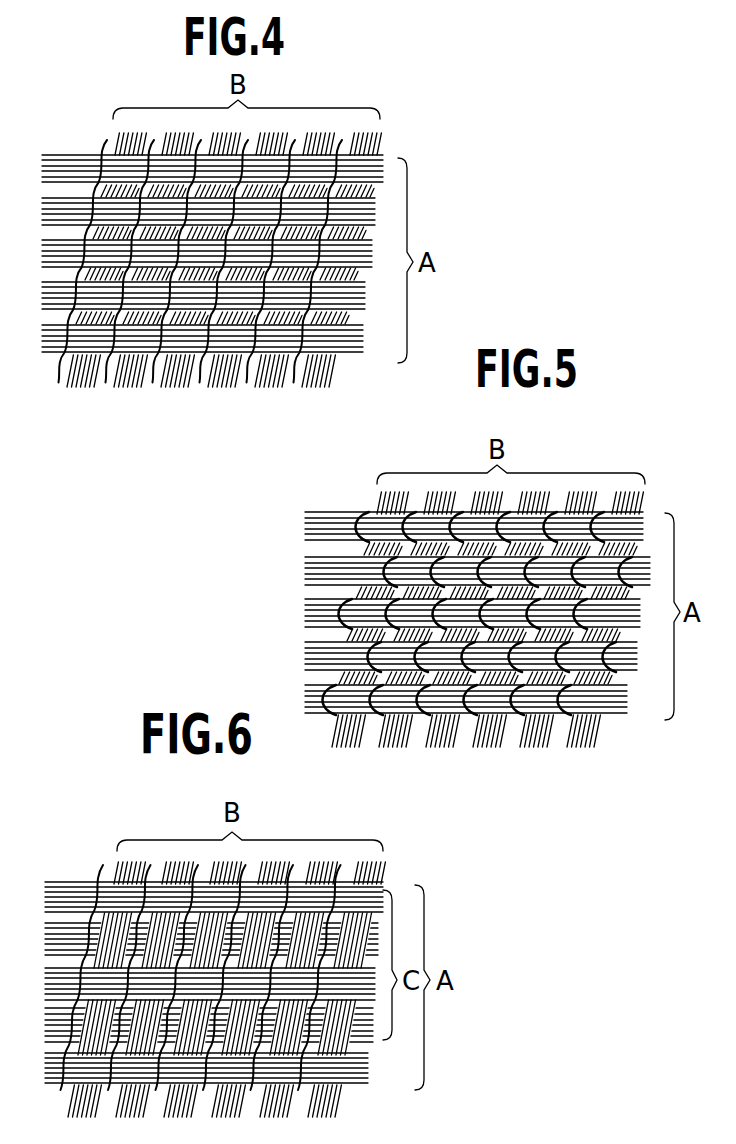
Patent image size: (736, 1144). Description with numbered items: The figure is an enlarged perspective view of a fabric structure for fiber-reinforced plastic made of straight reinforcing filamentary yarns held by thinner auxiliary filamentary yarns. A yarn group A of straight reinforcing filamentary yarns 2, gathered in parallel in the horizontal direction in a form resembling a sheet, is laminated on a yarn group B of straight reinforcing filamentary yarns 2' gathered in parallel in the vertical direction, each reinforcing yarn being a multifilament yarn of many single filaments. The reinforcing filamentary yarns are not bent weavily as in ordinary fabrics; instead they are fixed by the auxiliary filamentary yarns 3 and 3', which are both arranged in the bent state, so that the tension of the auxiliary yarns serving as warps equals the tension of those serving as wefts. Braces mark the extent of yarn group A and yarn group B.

In FIG. 4, the reinforcing filamentary yarn 2 is at (242, 141).
In FIG. 5, the reinforcing filamentary yarn 2 is at (499, 506).
In FIG. 6, the reinforcing filamentary yarn 2 is at (249, 869).
In FIG. 4, the reinforcing filamentary yarn 2' is at (385, 114).
In FIG. 5, the reinforcing filamentary yarn 2' is at (646, 481).
In FIG. 6, the reinforcing filamentary yarn 2' is at (391, 846).
In FIG. 4, the auxiliary filamentary yarn 3 is at (63, 276).
In FIG. 4, the auxiliary filamentary yarn 3' is at (125, 294).
In FIG. 6, the auxiliary filamentary yarn 3' is at (59, 994).